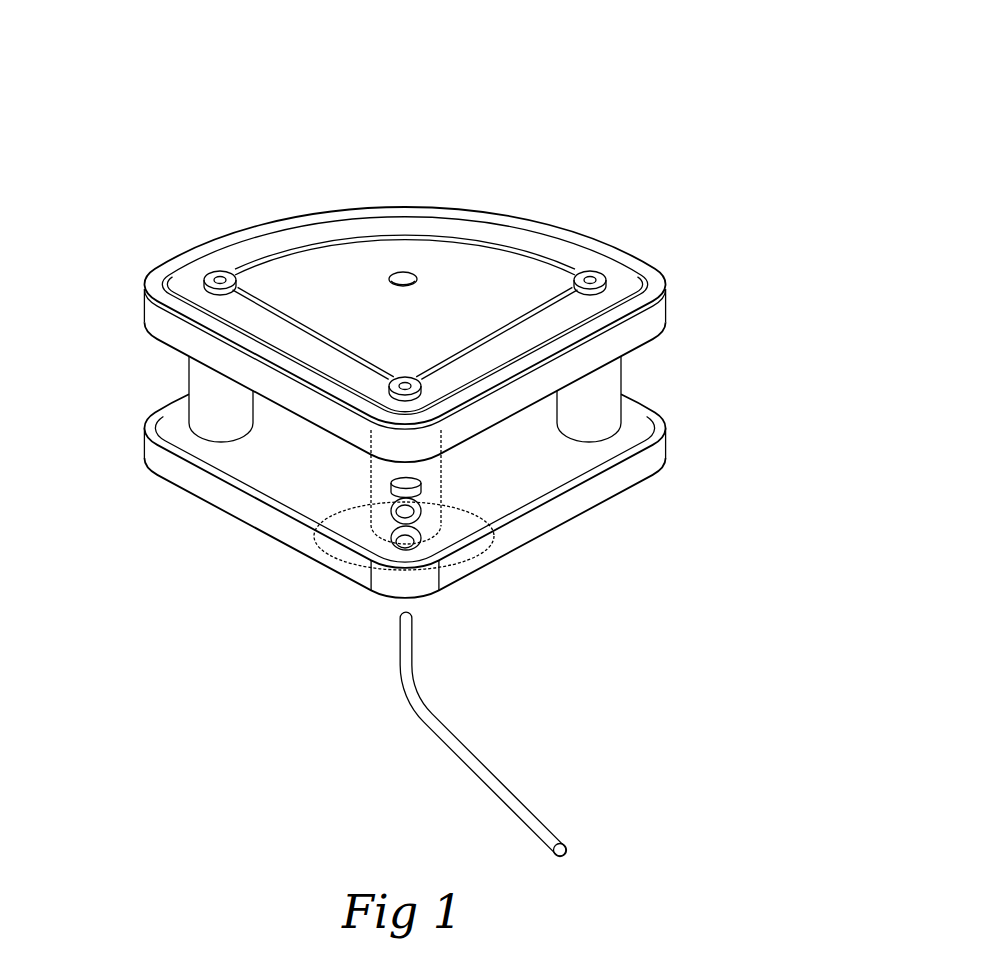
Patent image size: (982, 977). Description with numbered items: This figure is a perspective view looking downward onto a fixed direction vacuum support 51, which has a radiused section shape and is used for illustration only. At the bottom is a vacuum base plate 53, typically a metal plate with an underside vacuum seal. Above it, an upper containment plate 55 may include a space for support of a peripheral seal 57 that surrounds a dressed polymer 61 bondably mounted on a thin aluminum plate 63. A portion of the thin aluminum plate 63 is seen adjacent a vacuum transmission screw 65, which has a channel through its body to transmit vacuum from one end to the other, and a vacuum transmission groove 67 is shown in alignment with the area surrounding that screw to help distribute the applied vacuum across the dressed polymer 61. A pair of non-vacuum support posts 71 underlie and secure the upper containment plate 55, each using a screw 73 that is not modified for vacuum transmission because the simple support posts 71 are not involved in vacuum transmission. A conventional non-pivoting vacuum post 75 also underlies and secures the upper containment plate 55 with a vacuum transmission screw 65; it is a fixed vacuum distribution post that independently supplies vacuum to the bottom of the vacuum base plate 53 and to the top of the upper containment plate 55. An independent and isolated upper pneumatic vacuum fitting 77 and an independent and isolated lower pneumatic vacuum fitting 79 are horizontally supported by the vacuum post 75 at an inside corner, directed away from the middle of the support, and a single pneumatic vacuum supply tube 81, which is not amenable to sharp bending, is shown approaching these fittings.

The vacuum support 51 is at (675, 133).
The vacuum base plate 53 is at (600, 493).
The upper containment plate 55 is at (670, 305).
The peripheral seal 57 is at (160, 278).
The dressed polymer 61 is at (392, 266).
The thin aluminum plate 63 is at (222, 270).
The vacuum transmission screw 65 is at (405, 376).
The vacuum transmission groove 67 is at (530, 300).
The non-vacuum support post 71 is at (184, 378).
The screw 73 is at (600, 272).
The non-pivoting vacuum post 75 is at (442, 503).
The upper pneumatic vacuum fitting 77 is at (375, 515).
The lower pneumatic vacuum fitting 79 is at (382, 545).
The pneumatic vacuum supply tube 81 is at (455, 741).